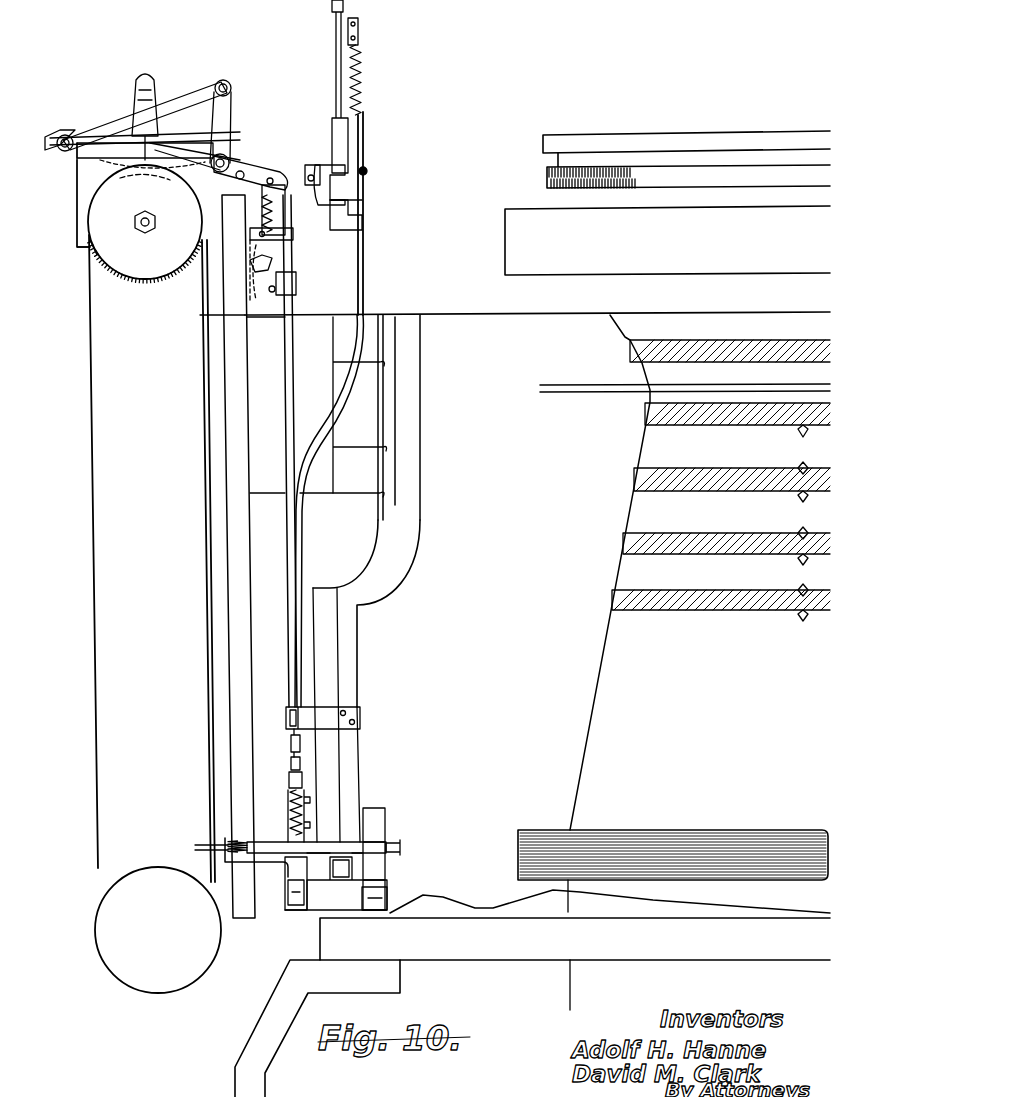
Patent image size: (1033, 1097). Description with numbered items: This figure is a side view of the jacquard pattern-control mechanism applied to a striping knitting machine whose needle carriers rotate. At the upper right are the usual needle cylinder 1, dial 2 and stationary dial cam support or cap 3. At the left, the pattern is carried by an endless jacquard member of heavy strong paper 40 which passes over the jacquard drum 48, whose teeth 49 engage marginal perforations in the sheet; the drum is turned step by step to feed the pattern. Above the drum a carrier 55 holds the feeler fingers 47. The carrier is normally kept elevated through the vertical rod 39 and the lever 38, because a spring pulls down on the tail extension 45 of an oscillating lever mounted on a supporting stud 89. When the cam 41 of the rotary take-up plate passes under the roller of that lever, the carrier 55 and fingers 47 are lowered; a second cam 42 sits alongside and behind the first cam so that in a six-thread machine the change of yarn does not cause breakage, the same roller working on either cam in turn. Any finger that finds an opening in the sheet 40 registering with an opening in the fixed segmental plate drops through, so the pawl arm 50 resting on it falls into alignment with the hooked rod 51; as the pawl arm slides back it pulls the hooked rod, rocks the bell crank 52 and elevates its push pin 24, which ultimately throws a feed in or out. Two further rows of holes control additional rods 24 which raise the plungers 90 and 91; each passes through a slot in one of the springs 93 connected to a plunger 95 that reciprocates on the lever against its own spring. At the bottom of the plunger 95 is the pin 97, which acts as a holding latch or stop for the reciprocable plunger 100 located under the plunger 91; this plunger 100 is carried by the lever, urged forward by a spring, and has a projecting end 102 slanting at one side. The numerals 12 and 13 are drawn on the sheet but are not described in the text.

The needle cylinder 1 is at (681, 250).
The dial 2 is at (713, 188).
The stationary dial cam support or cap 3 is at (795, 151).
The operating rod 12 is at (404, 84).
The feed direction arrow 13 is at (272, 794).
The push pin 24 is at (320, 165).
The lever 38 is at (271, 178).
The vertical rod 39 is at (288, 370).
The jacquard sheet 40 is at (98, 480).
The cam 41 is at (436, 900).
The second cam 42 is at (590, 900).
The tail extension 45 is at (293, 876).
The feeler fingers 47 is at (76, 170).
The jacquard drum 48 is at (150, 282).
The teeth 49 is at (95, 255).
The pawl arm 50 is at (190, 136).
The hooked rod 51 is at (262, 158).
The bell crank 52 is at (335, 183).
The carrier 55 is at (143, 140).
The supporting stud 89 is at (392, 897).
The plunger 90 is at (302, 741).
The plunger 91 is at (302, 756).
The springs 93 is at (302, 774).
The plunger 95 is at (304, 787).
The pin 97 is at (292, 842).
The reciprocable plunger 100 is at (270, 848).
The projecting end 102 is at (401, 848).